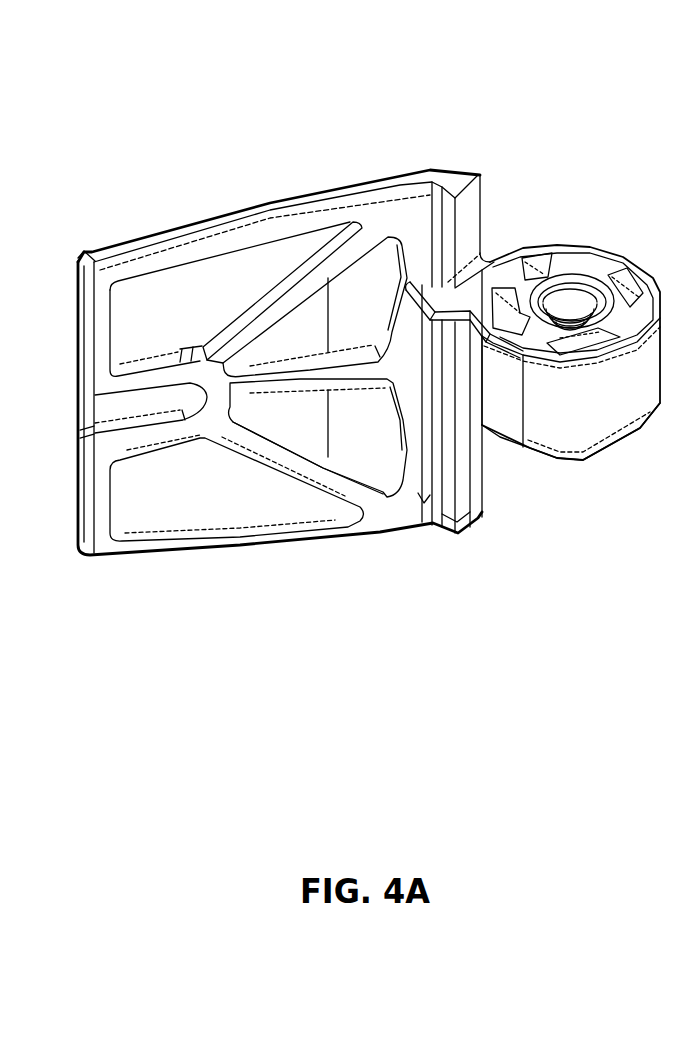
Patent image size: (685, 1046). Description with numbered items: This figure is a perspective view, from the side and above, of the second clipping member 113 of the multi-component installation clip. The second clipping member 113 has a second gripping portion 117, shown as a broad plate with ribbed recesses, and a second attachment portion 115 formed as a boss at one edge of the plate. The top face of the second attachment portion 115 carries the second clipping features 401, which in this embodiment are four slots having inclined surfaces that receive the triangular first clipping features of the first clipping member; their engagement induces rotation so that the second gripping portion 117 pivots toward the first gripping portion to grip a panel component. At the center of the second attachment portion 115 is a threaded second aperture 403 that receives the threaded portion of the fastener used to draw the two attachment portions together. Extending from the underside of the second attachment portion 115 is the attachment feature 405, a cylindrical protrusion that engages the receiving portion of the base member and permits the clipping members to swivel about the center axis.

The second clipping member 113 is at (340, 147).
The second gripping portion 117 is at (218, 253).
The second attachment portion 115 is at (595, 422).
The second clipping feature 401 is at (623, 280).
The threaded second aperture 403 is at (566, 296).
The attachment feature 405 is at (556, 460).